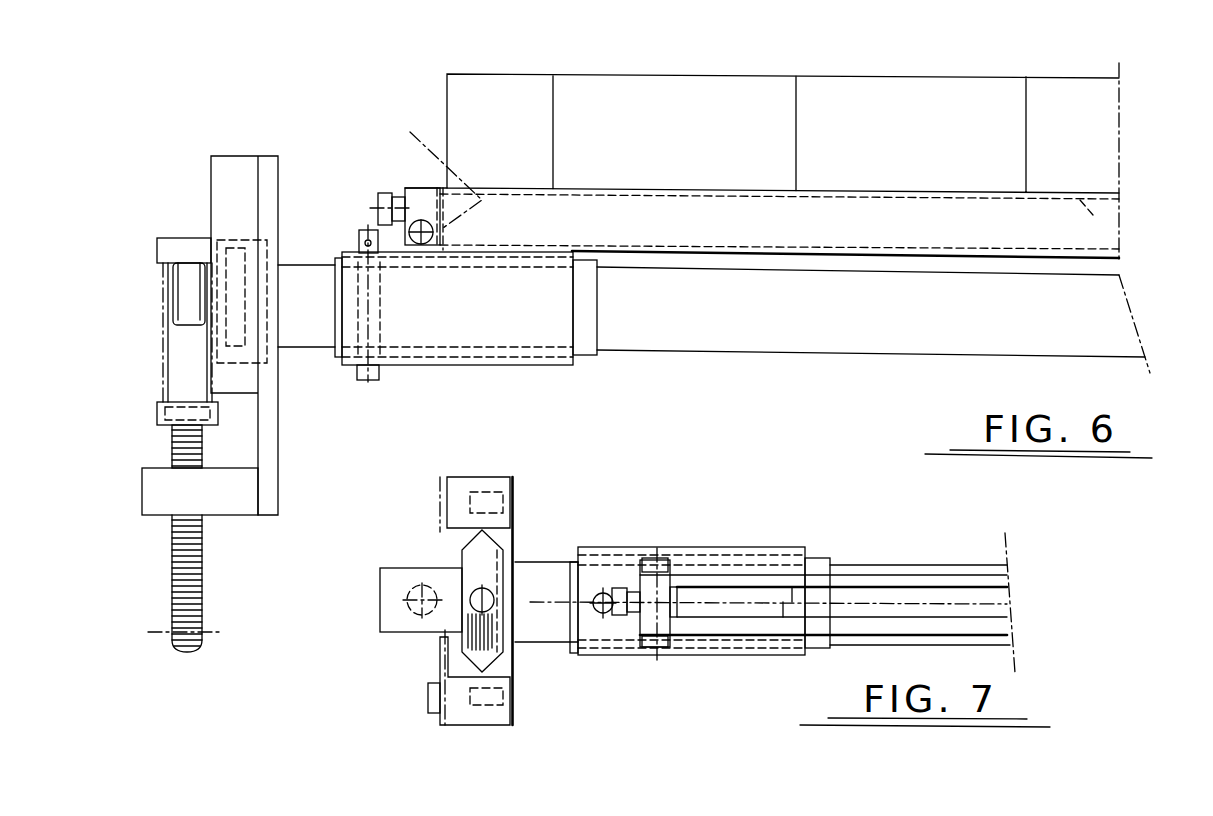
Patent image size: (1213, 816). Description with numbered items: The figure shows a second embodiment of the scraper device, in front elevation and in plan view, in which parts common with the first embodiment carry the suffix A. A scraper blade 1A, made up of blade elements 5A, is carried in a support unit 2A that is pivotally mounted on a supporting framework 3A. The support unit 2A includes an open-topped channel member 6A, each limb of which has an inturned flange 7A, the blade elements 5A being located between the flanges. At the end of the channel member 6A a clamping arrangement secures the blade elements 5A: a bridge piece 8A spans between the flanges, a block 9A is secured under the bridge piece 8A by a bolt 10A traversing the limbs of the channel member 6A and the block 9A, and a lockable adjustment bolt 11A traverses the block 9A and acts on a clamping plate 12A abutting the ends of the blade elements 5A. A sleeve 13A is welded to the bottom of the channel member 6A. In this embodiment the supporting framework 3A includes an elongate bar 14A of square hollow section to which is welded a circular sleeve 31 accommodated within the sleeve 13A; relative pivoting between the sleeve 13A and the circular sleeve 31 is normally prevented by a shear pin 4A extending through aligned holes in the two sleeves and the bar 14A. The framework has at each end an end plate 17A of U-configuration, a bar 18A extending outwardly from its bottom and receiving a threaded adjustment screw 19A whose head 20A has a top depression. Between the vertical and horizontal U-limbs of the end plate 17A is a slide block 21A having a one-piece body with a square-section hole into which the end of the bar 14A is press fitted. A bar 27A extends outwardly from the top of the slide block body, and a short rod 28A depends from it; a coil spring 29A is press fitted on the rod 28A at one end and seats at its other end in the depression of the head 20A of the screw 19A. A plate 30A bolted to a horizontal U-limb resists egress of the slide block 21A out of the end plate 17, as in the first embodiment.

In FIG. 6, the scraper blade 1A is at (957, 76).
In FIG. 7, the scraper blade 1A is at (880, 567).
In FIG. 6, the support unit 2A is at (393, 186).
In FIG. 6, the supporting framework 3A is at (283, 355).
In FIG. 6, the shear pin 4A is at (358, 240).
In FIG. 7, the shear pin 4A is at (598, 610).
In FIG. 6, the blade elements 5A is at (505, 93).
In FIG. 7, the blade elements 5A is at (825, 613).
In FIG. 6, the channel member 6A is at (1089, 231).
In FIG. 6, the inturned flange 7A is at (1093, 215).
In FIG. 7, the bridge piece 8A is at (650, 615).
In FIG. 7, the block 9A is at (640, 617).
In FIG. 7, the bolt 10A is at (662, 560).
In FIG. 6, the lockable adjustment bolt 11A is at (383, 205).
In FIG. 7, the lockable adjustment bolt 11A is at (632, 590).
In FIG. 6, the clamping plate 12A is at (430, 178).
In FIG. 7, the clamping plate 12A is at (673, 600).
In FIG. 6, the sleeve 13A is at (557, 372).
In FIG. 6, the elongate bar 14A is at (898, 330).
In FIG. 7, the end plate 17 is at (505, 537).
In FIG. 6, the end plate 17A is at (276, 440).
In FIG. 6, the bar 18A is at (222, 505).
In FIG. 6, the threaded adjustment screw 19A is at (173, 545).
In FIG. 6, the head 20A is at (157, 410).
In FIG. 7, the slide block 21A is at (455, 560).
In FIG. 6, the bar 27A is at (178, 248).
In FIG. 7, the bar 27A is at (392, 615).
In FIG. 6, the short rod 28A is at (185, 305).
In FIG. 6, the coil spring 29A is at (165, 373).
In FIG. 7, the plate 30A is at (440, 655).
In FIG. 6, the circular sleeve 31 is at (582, 333).